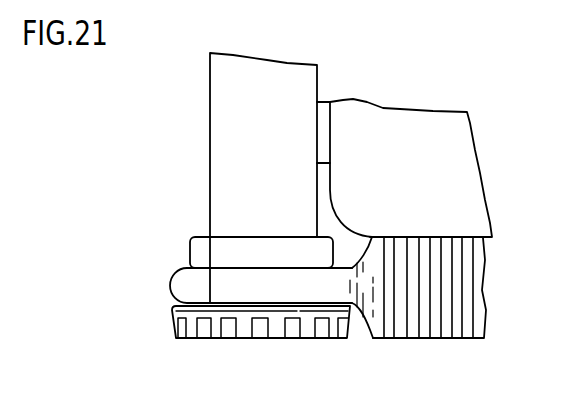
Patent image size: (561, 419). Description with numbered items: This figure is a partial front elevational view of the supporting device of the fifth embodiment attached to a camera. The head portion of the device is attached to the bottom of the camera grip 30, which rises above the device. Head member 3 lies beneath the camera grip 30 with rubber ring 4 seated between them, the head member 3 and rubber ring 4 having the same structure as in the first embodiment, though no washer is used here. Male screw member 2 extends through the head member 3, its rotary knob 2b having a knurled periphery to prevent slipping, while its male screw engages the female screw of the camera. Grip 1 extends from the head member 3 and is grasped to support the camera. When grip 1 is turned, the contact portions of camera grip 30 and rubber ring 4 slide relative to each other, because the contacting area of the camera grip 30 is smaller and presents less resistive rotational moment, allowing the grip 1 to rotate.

The grip 1 is at (423, 326).
The male screw member 2 is at (262, 354).
The rotary knob 2b is at (203, 330).
The head member 3 is at (183, 285).
The rubber ring 4 is at (200, 252).
The camera grip 30 is at (222, 137).